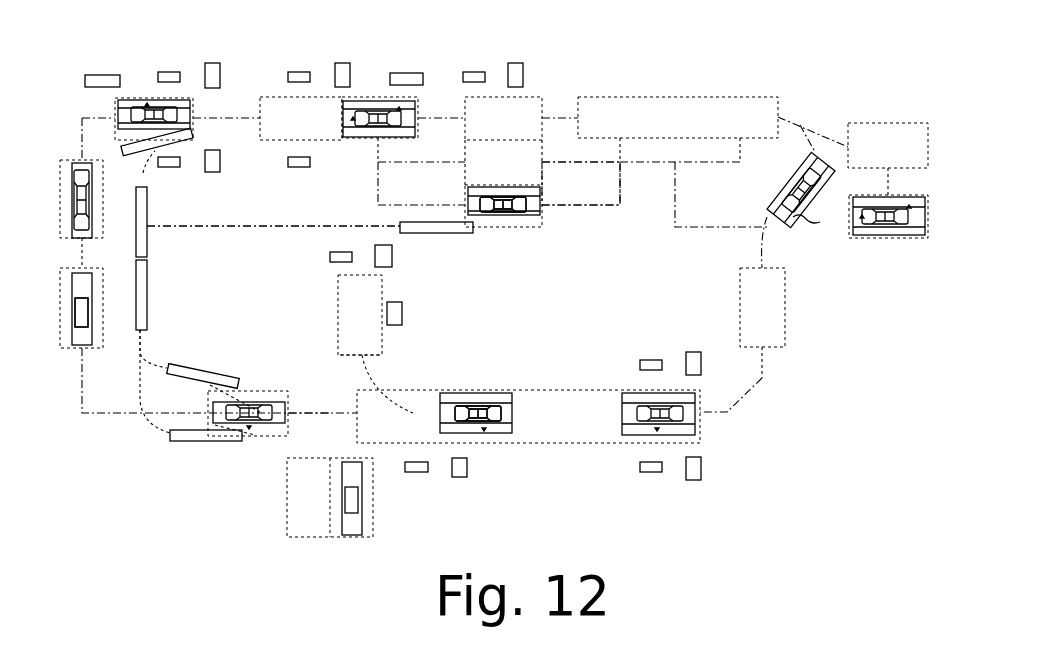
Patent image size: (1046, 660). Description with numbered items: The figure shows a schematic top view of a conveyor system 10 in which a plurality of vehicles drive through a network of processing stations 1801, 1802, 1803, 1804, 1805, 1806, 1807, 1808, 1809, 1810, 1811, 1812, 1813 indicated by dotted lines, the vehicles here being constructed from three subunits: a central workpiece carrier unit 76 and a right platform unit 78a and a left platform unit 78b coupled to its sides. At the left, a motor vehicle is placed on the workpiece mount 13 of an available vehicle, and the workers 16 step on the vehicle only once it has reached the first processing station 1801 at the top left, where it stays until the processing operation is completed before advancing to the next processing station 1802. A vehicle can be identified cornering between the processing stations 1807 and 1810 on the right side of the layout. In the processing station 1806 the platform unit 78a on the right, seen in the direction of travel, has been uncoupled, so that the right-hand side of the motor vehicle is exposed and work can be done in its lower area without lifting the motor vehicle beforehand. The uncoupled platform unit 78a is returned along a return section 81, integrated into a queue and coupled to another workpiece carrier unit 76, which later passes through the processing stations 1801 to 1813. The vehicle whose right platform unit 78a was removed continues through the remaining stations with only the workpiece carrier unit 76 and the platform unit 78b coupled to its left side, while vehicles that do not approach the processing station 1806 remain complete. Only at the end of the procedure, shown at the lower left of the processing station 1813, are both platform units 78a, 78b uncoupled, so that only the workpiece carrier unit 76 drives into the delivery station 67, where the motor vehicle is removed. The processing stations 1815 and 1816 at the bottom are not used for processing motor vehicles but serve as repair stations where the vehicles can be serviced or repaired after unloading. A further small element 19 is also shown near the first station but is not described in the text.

The conveyor system 10 is at (168, 495).
The workpiece mount 13 is at (72, 173).
The workers 16 is at (484, 430).
The component 19 is at (172, 72).
The delivery station 67 is at (107, 327).
The workpiece carrier unit 76 is at (532, 215).
The platform unit 78a is at (143, 280).
The platform unit 78b is at (182, 441).
The return section 81 is at (210, 228).
The processing station 1801 is at (133, 97).
The processing station 1802 is at (278, 140).
The processing station 1803 is at (358, 138).
The processing station 1804 is at (533, 97).
The processing station 1805 is at (544, 170).
The processing station 1806 is at (543, 215).
The processing station 1807 is at (700, 97).
The processing station 1808 is at (862, 123).
The processing station 1809 is at (859, 238).
The processing station 1810 is at (786, 325).
The processing station 1811 is at (582, 388).
The processing station 1812 is at (382, 337).
The processing station 1813 is at (278, 391).
The processing station 1815 is at (287, 506).
The processing station 1816 is at (378, 487).